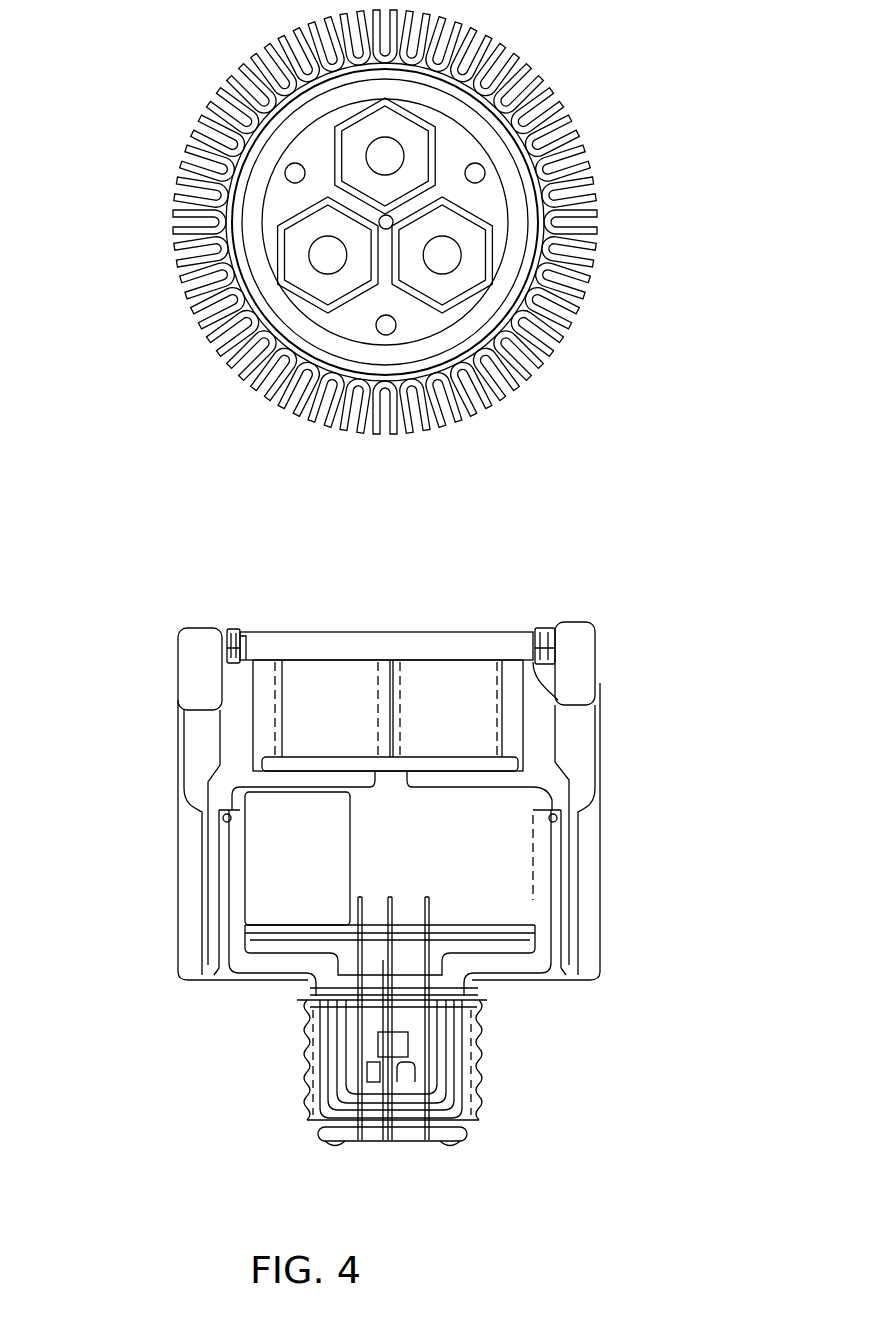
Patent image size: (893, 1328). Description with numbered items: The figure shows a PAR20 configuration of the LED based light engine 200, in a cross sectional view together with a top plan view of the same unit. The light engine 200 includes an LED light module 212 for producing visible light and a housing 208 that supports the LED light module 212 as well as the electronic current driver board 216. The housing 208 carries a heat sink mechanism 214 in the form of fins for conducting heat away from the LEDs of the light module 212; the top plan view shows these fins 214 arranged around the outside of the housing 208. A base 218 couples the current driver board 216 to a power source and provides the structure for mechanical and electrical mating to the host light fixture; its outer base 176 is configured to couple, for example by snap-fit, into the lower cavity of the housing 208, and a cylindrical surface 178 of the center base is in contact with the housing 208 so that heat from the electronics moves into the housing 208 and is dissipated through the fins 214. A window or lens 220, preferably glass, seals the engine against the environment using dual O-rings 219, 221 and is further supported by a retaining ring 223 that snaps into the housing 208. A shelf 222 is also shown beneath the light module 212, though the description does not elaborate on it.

The LED based light engine 200 is at (403, 853).
The housing 208 is at (406, 495).
The heat sink mechanism 214 is at (326, 409).
The LED light module 212 is at (328, 700).
The lens 220 is at (447, 642).
The retaining ring 223 is at (258, 586).
The O-ring 219 is at (545, 660).
The O-ring 221 is at (533, 662).
The support shelf 222 is at (520, 760).
The electronic current driver board 216 is at (568, 907).
The cylindrical surface 178 is at (568, 907).
The outer base 176 is at (222, 978).
The base 218 is at (240, 988).